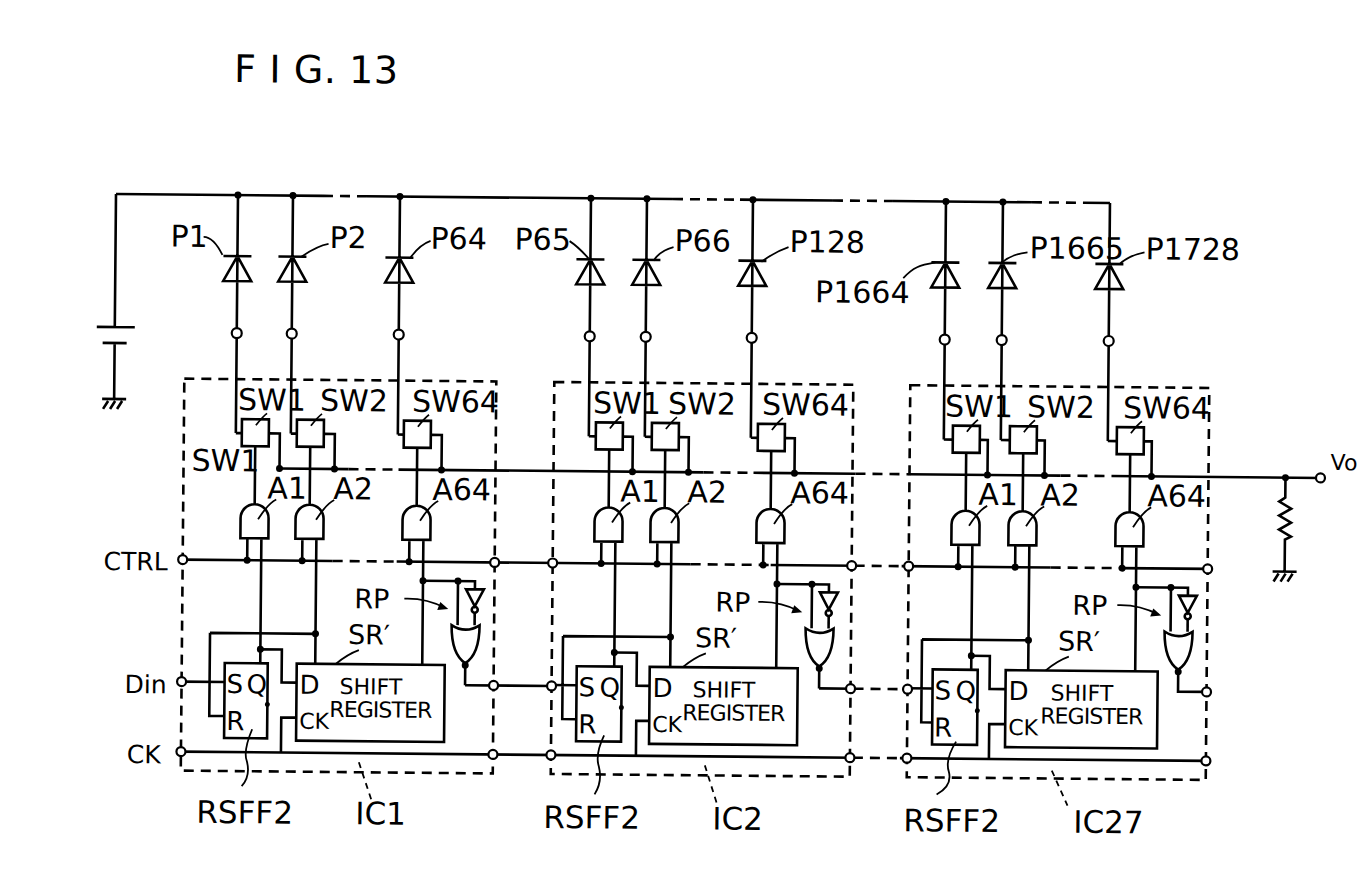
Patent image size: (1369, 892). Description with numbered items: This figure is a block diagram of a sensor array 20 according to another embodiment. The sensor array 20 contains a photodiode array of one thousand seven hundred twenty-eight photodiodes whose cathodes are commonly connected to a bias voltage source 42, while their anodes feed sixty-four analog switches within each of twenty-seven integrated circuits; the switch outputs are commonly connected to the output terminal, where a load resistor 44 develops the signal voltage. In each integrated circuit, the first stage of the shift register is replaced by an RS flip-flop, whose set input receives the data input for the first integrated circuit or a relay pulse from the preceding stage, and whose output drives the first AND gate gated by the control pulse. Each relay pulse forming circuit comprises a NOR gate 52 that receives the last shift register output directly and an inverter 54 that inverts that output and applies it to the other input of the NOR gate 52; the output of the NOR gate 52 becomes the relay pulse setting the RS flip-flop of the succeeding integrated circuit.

The sensor array 20 is at (224, 290).
The bias voltage source 42 is at (124, 327).
The load resistor 44 is at (1296, 514).
The NOR gate 52 is at (484, 644).
The inverter 54 is at (487, 600).